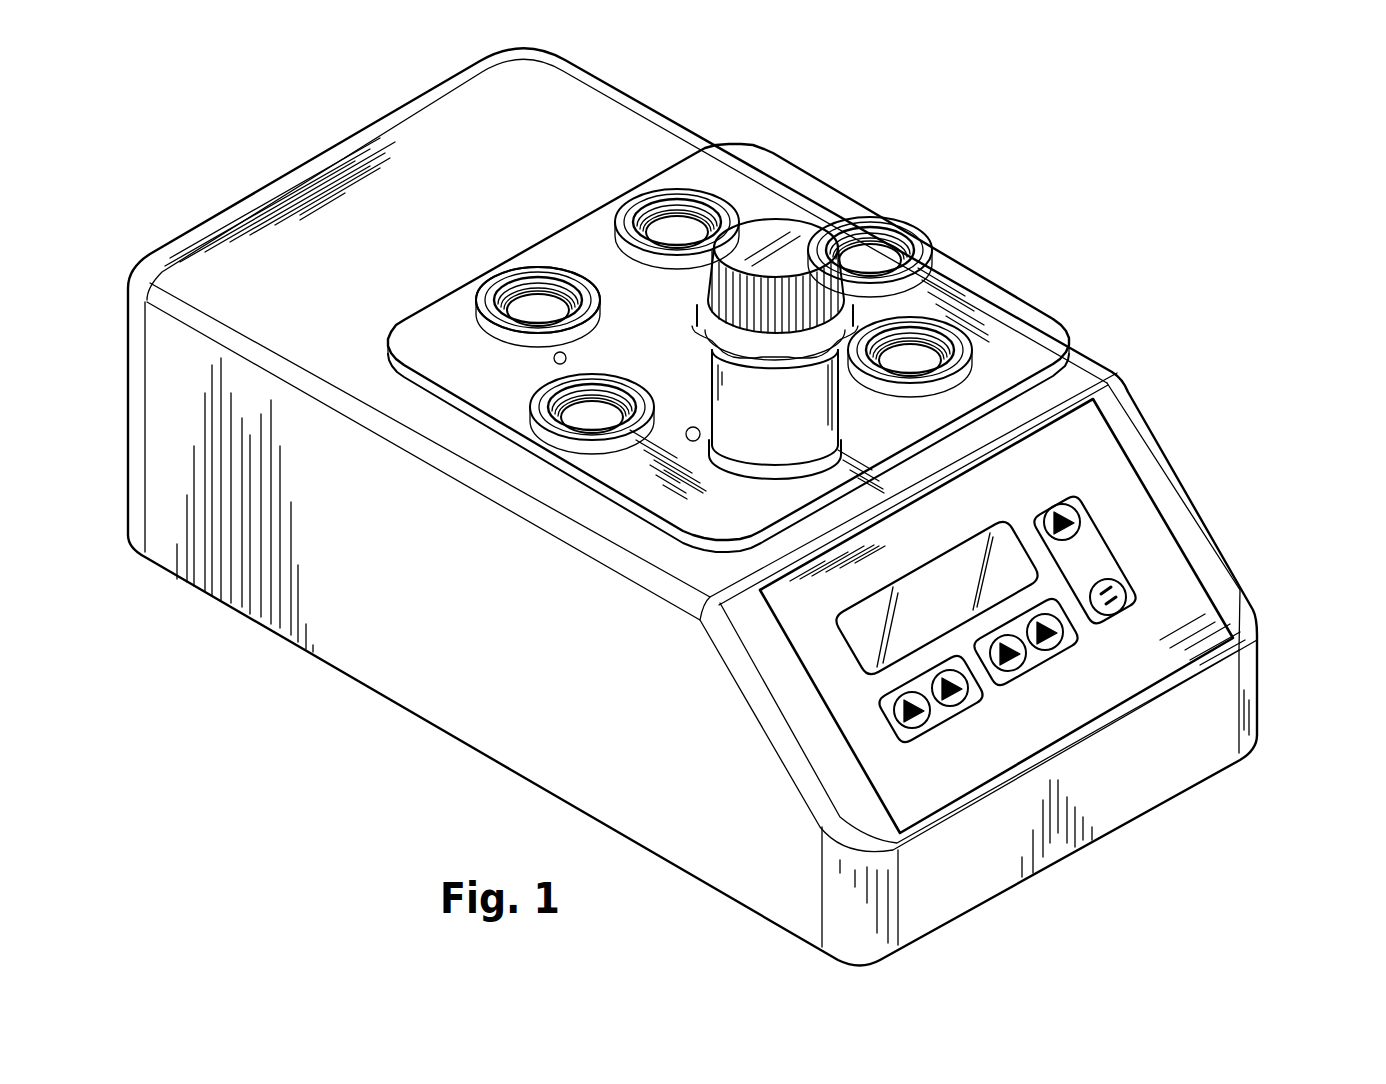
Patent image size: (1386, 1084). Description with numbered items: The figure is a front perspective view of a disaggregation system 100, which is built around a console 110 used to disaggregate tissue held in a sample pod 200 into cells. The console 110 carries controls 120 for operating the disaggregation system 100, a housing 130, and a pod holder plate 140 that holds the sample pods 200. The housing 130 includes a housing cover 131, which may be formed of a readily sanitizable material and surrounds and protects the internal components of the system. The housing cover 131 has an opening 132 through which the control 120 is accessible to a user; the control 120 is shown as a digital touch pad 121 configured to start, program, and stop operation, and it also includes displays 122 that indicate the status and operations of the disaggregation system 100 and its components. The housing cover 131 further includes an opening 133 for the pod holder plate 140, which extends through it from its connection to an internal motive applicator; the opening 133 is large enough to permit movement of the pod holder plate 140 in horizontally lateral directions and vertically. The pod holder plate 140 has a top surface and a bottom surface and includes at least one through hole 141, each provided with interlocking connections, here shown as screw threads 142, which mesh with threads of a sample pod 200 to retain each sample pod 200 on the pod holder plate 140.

The disaggregation system 100 is at (1063, 147).
The console 110 is at (1210, 620).
The controls 120 is at (860, 698).
The digital touch pad 121 is at (1033, 670).
The displays 122 is at (1020, 563).
The housing 130 is at (347, 180).
The housing cover 131 is at (810, 637).
The opening 132 is at (1173, 533).
The opening 133 is at (518, 462).
The pod holder plate 140 is at (1043, 337).
The through hole 141 is at (533, 268).
The screw threads 142 is at (507, 288).
The sample pod 200 is at (788, 256).